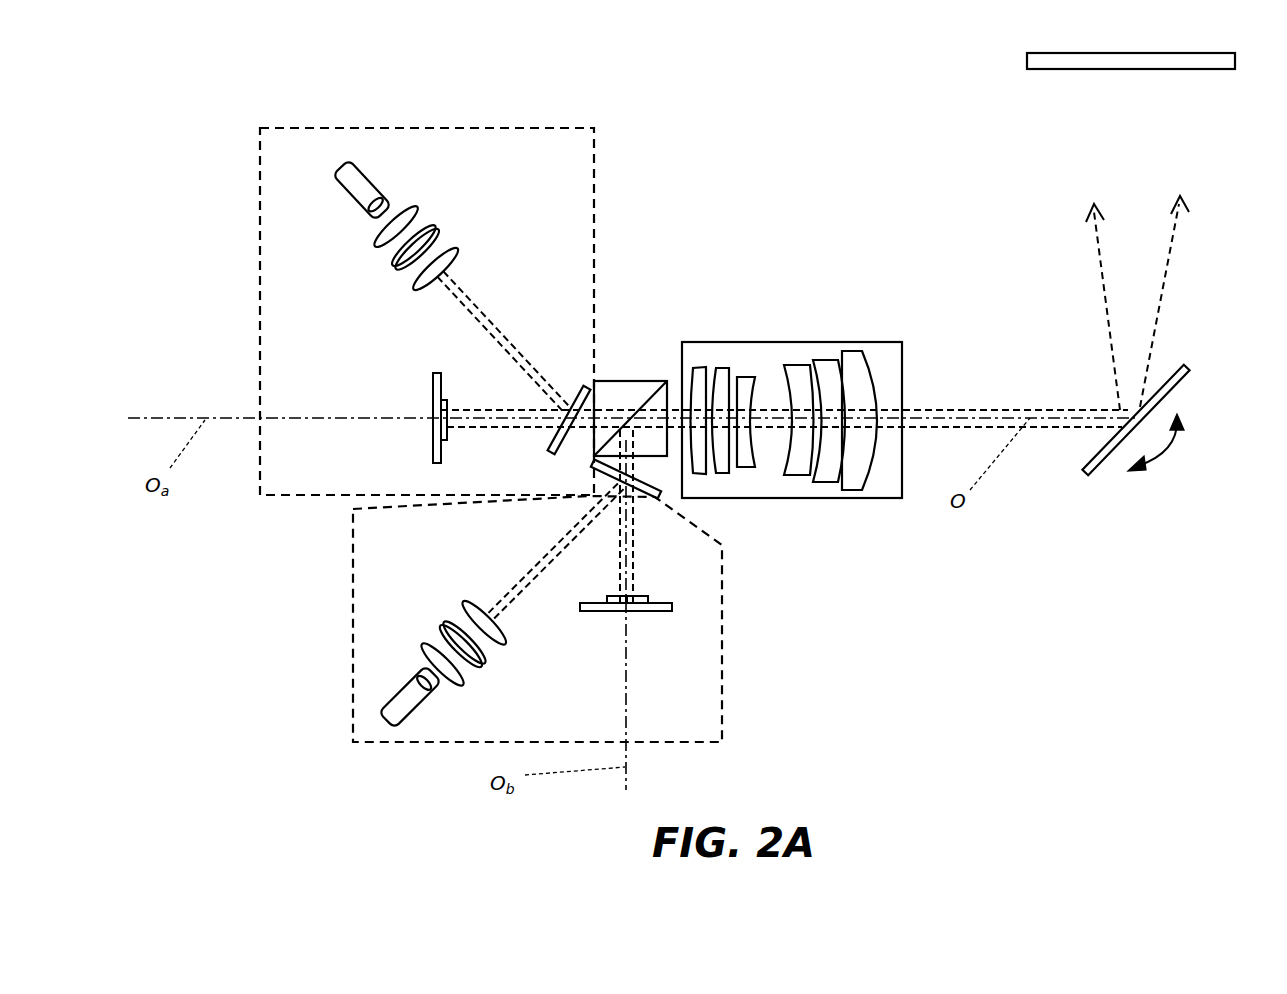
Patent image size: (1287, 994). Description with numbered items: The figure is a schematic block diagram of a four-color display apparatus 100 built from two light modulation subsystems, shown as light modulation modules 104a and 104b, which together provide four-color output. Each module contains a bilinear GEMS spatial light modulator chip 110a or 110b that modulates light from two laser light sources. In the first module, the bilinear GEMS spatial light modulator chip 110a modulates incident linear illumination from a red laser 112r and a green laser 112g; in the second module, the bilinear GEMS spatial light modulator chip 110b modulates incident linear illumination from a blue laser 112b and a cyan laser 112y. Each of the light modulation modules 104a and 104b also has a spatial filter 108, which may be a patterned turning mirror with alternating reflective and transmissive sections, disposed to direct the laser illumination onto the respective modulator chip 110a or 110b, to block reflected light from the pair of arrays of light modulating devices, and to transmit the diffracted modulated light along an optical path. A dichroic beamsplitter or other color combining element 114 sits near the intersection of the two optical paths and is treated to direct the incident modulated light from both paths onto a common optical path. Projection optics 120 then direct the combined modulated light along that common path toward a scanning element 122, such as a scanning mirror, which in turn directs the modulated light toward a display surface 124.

The display apparatus 100 is at (1170, 702).
The light modulation module 104a is at (258, 300).
The light modulation module 104b is at (724, 640).
The spatial filter 108 is at (577, 390).
The bilinear GEMS spatial light modulator chip 110a is at (436, 418).
The bilinear GEMS spatial light modulator chip 110b is at (625, 612).
The red laser 112r is at (350, 160).
The green laser 112g is at (402, 180).
The blue laser 112b is at (423, 669).
The cyan laser 112y is at (393, 717).
The color combining element 114 is at (651, 395).
The projection optics 120 is at (873, 500).
The scanning element 122 is at (1168, 405).
The display surface 124 is at (1185, 68).